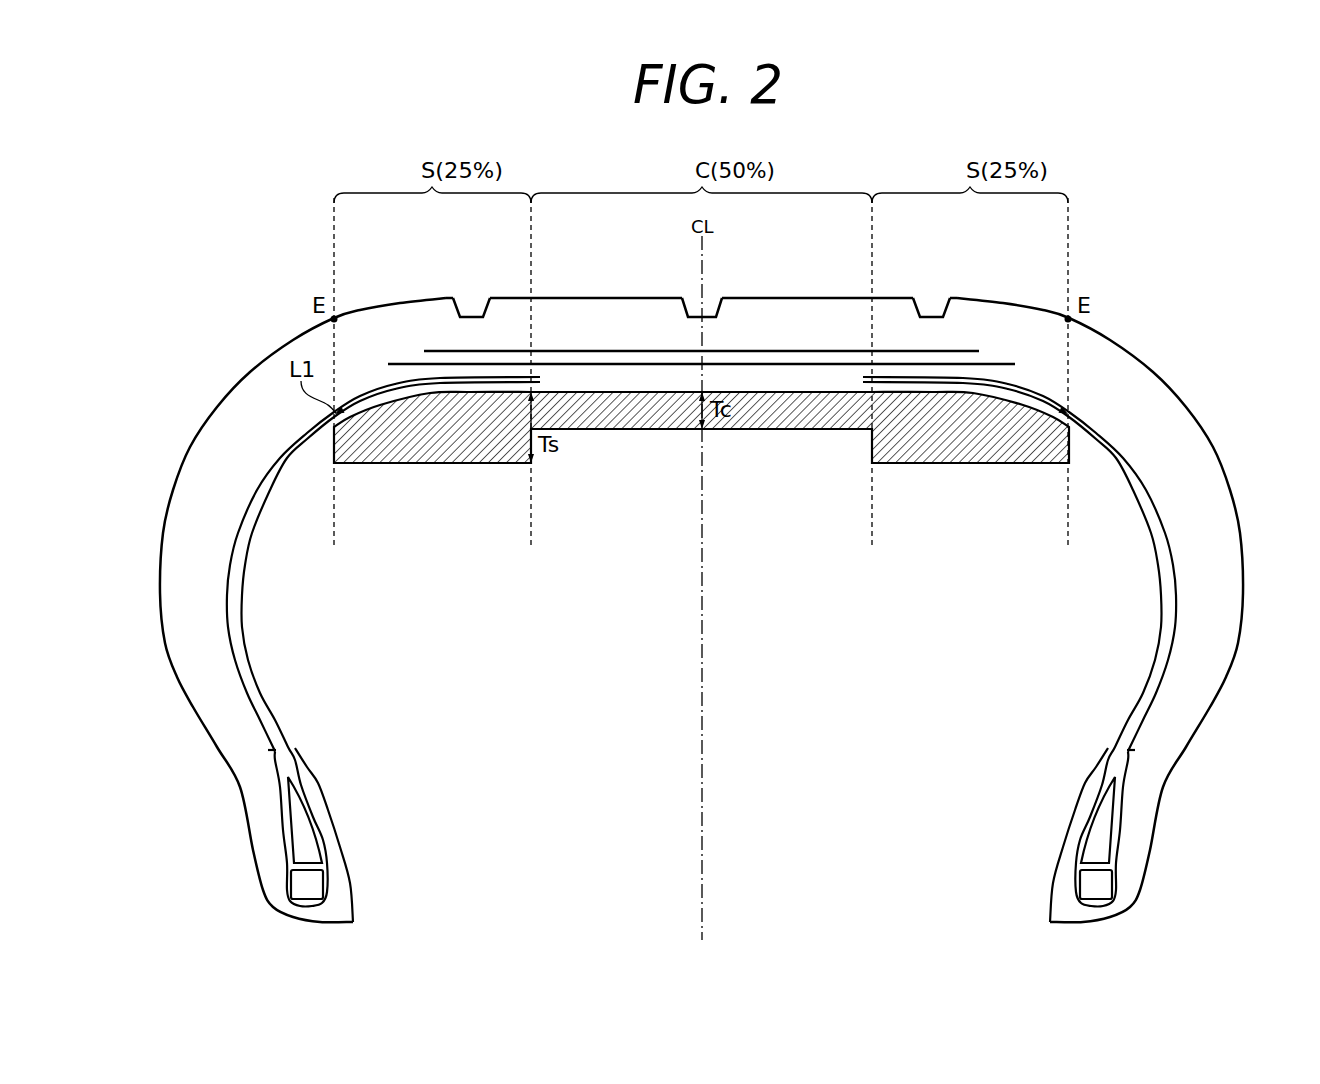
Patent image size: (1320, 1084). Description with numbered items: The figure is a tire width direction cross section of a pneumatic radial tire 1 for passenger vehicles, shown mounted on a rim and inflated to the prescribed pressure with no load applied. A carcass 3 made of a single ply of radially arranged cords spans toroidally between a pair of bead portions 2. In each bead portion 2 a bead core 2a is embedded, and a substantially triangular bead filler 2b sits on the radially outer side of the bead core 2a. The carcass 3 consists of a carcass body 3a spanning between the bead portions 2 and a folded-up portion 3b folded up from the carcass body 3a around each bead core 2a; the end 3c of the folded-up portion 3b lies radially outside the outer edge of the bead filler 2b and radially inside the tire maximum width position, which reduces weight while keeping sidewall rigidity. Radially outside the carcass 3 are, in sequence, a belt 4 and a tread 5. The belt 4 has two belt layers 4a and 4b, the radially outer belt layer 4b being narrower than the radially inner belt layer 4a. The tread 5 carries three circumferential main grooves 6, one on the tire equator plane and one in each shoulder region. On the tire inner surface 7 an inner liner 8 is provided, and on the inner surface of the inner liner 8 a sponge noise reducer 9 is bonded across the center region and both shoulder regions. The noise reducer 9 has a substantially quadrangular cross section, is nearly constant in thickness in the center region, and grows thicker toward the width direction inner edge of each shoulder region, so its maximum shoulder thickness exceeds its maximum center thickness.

The tire 1 is at (701, 548).
The bead portions 2 is at (240, 818).
The bead core 2a is at (313, 885).
The bead filler 2b is at (303, 845).
The carcass 3 is at (372, 735).
The carcass body 3a is at (303, 787).
The folded-up portion 3b is at (276, 758).
The end of the carcass folded-up portion 3c is at (262, 749).
The belt 4 is at (1040, 313).
The belt layer 4a is at (978, 363).
The belt layer 4b is at (970, 348).
The tread 5 is at (993, 318).
The circumferential main grooves 6 is at (470, 308).
The tire inner surface 7 is at (748, 395).
The inner liner 8 is at (701, 427).
The noise reducer 9 is at (668, 430).